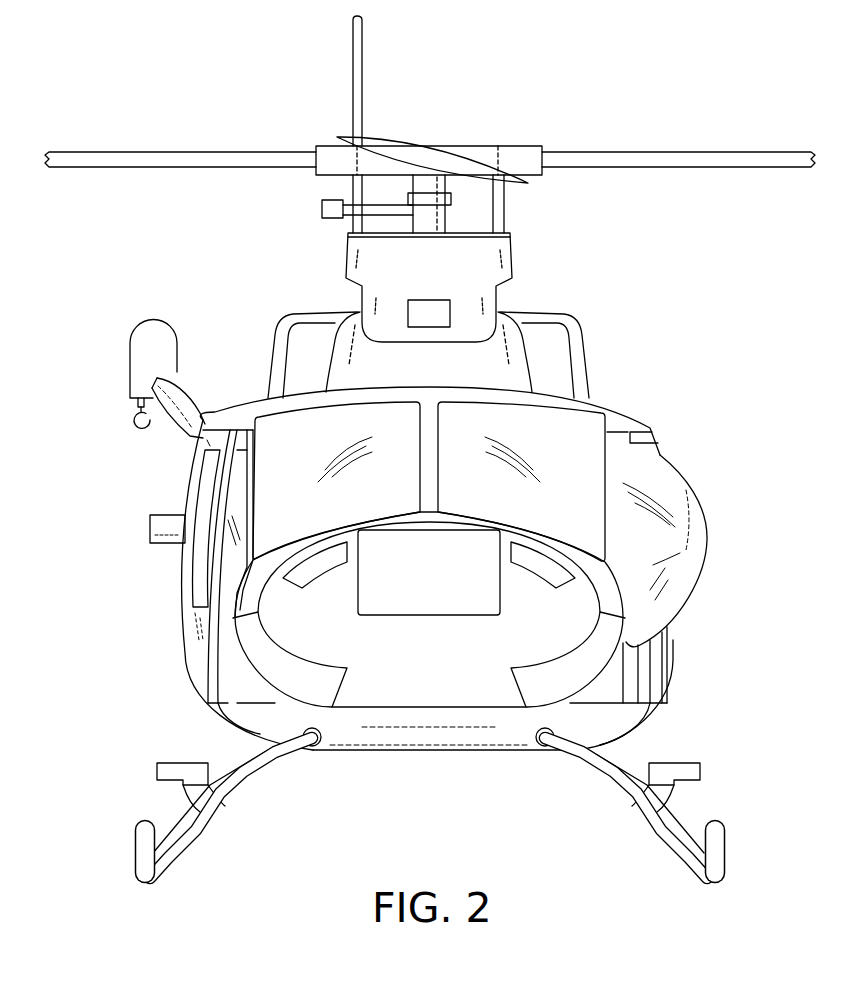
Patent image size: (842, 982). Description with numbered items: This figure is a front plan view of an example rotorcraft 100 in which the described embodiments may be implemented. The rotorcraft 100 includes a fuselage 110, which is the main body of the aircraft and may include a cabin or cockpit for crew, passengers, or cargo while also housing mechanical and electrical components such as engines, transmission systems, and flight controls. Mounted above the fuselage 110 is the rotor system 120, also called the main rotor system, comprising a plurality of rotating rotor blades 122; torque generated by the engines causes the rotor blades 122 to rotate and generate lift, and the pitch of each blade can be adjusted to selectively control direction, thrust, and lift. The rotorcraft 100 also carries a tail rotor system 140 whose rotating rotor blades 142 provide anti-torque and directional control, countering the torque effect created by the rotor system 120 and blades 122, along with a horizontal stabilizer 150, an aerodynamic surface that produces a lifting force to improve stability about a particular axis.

The rotorcraft 100 is at (116, 62).
The fuselage 110 is at (670, 667).
The rotor system 120 is at (456, 117).
The rotor blades 122 is at (660, 152).
The tail rotor system 140 is at (338, 106).
The rotor blades 142 is at (353, 45).
The horizontal stabilizer 150 is at (150, 528).